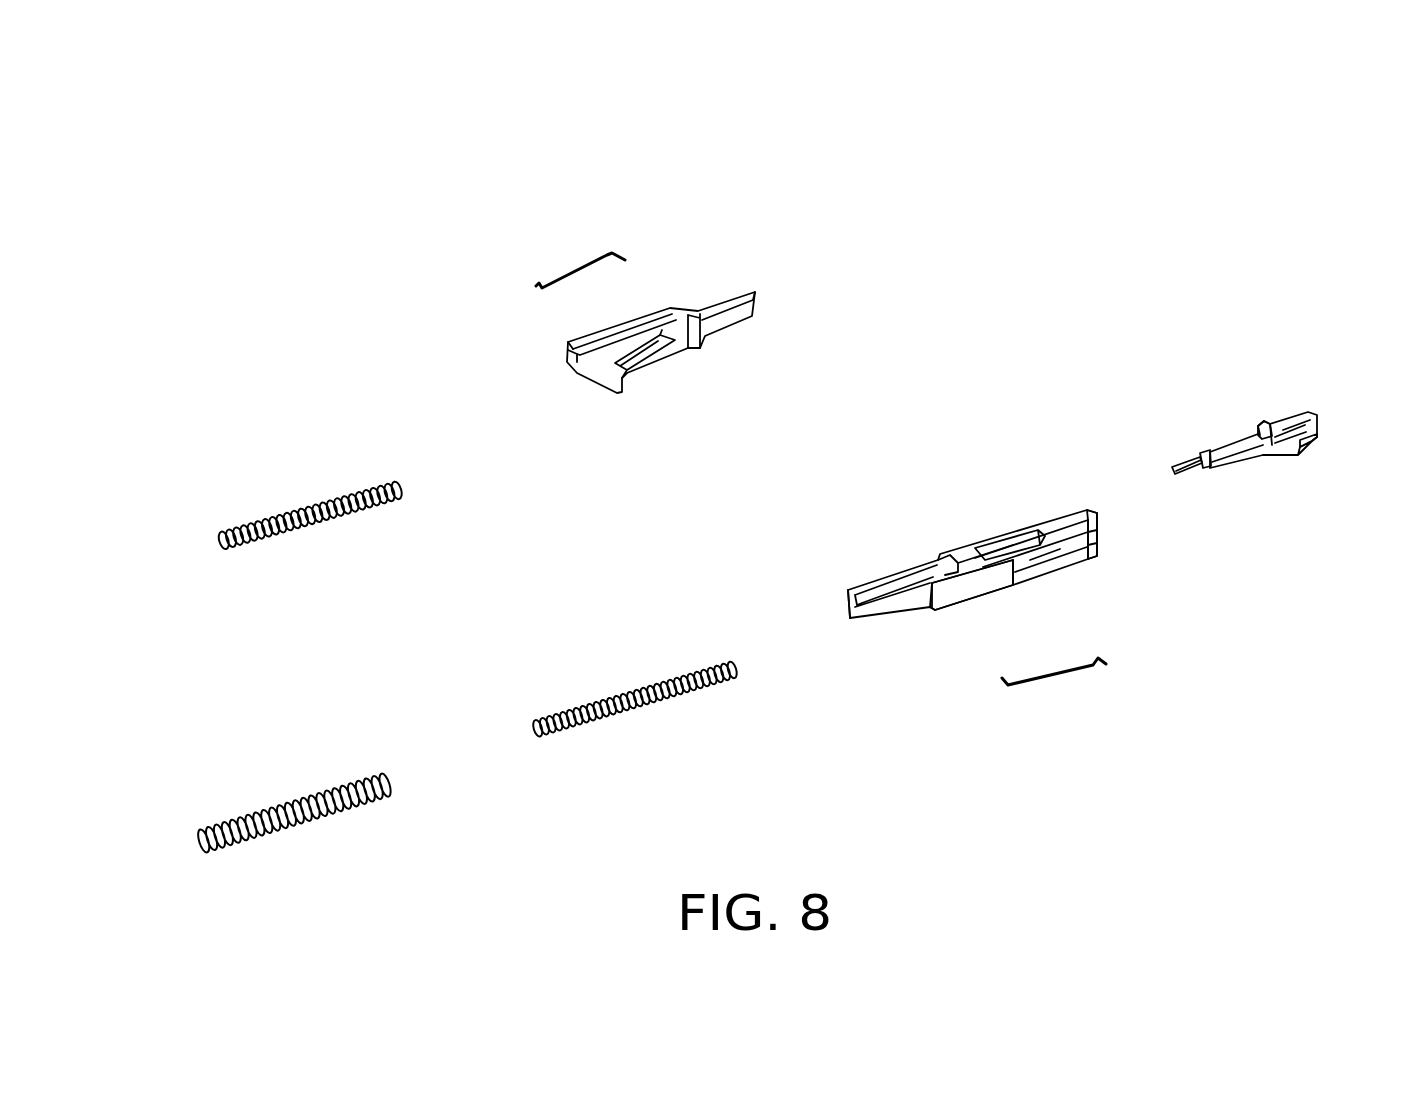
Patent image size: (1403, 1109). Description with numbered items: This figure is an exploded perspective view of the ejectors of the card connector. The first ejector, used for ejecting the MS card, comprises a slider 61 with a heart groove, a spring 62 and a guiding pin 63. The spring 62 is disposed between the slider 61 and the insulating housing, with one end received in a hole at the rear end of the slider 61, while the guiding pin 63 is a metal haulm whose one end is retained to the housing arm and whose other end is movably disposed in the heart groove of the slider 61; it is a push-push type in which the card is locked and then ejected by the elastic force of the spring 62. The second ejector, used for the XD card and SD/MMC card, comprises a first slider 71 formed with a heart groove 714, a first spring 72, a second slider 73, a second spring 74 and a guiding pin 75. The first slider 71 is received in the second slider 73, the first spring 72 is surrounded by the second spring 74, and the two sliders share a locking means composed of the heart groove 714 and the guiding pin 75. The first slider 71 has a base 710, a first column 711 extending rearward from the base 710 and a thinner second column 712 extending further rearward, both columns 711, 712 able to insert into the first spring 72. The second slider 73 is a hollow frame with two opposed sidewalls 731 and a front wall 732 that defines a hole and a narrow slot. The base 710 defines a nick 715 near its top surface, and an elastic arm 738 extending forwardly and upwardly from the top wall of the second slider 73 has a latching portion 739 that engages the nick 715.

The slider 61 is at (730, 318).
The spring 62 is at (285, 517).
The guiding pin 63 is at (574, 266).
The first slider 71 is at (1223, 437).
The base 710 is at (1263, 427).
The first column 711 is at (1228, 460).
The second column 712 is at (1182, 458).
The heart groove 714 is at (1297, 457).
The nick 715 is at (1260, 427).
The first spring 72 is at (628, 690).
The second slider 73 is at (1014, 579).
The sidewalls 731 is at (948, 597).
The front wall 732 is at (1105, 550).
The elastic arm 738 is at (1010, 533).
The latching portion 739 is at (1043, 562).
The second spring 74 is at (290, 807).
The guiding pin 75 is at (1048, 683).